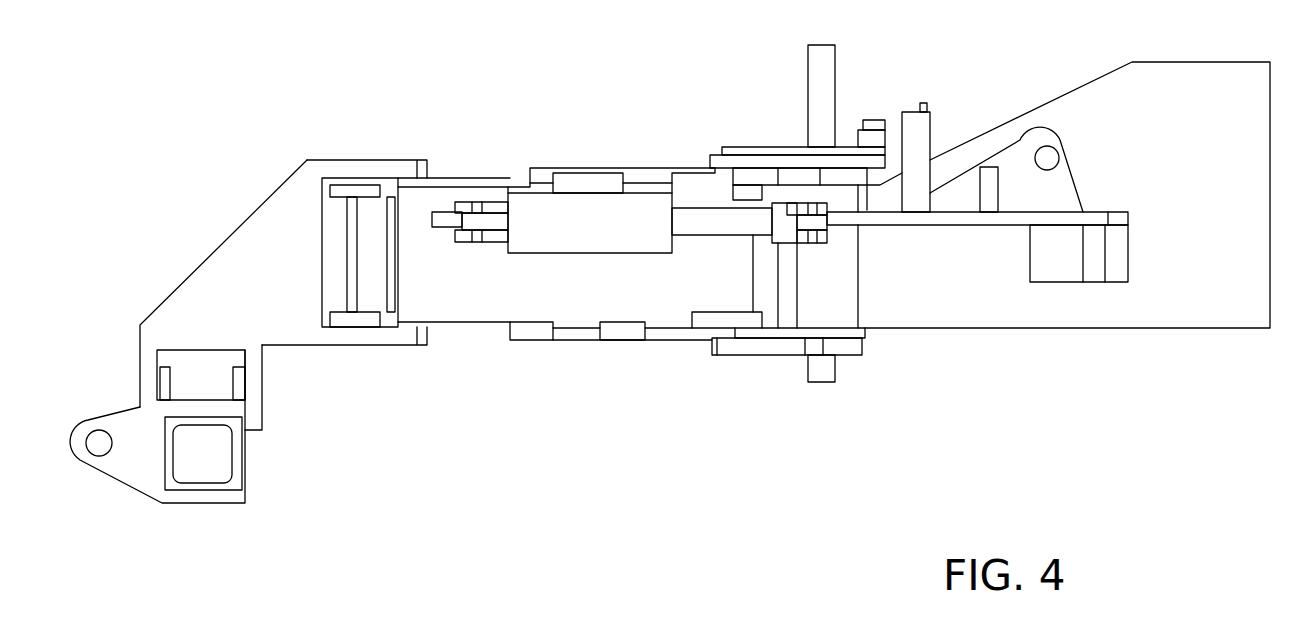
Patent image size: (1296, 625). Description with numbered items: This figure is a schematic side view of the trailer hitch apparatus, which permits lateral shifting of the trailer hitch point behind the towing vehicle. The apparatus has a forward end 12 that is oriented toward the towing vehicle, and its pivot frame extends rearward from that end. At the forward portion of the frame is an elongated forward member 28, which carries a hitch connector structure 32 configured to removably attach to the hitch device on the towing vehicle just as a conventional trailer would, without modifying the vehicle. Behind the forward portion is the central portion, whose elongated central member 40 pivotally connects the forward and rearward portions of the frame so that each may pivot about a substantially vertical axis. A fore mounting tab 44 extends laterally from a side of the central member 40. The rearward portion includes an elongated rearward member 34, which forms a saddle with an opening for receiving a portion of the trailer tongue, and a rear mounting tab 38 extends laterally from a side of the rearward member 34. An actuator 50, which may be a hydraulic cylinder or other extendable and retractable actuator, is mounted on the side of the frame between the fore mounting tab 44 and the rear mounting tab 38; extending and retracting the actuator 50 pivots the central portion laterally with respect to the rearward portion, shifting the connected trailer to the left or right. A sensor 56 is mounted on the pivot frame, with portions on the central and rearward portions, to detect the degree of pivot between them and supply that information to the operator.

The forward end 12 is at (116, 296).
The forward member 28 is at (297, 307).
The hitch connector structure 32 is at (197, 508).
The rearward member 34 is at (858, 275).
The rear mounting tab 38 is at (875, 220).
The central member 40 is at (588, 302).
The fore mounting tab 44 is at (443, 218).
The actuator 50 is at (633, 218).
The sensor 56 is at (872, 104).